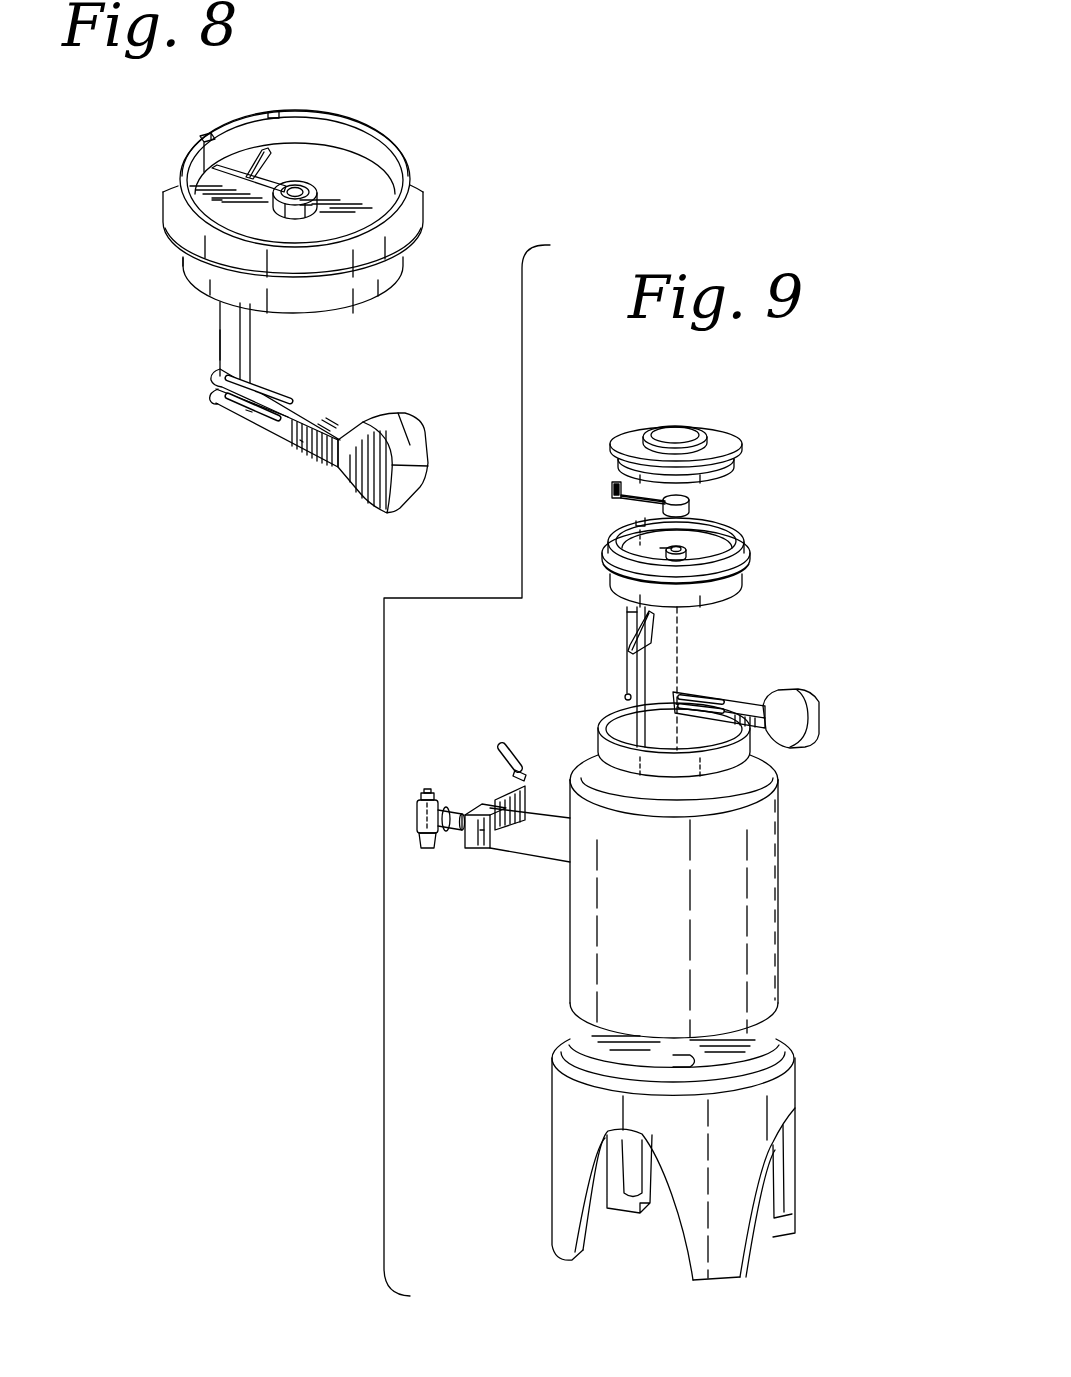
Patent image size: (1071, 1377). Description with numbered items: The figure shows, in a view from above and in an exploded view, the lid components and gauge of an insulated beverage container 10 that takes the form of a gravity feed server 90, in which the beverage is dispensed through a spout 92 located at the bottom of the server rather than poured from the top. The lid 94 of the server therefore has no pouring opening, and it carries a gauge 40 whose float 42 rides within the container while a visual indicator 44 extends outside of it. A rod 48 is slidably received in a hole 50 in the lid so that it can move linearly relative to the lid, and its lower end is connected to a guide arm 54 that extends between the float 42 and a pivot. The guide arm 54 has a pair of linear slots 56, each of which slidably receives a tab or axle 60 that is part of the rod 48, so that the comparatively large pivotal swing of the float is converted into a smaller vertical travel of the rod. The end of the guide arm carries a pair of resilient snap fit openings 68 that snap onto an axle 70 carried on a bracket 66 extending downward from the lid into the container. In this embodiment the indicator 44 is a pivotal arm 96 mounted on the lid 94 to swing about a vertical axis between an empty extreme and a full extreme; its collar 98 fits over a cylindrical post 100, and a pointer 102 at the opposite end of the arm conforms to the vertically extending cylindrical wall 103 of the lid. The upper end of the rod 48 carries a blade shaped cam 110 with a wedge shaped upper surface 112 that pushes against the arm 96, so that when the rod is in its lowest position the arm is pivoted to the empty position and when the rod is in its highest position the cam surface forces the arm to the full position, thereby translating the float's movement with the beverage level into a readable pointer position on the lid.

In FIG. 9, the insulated beverage container 10 is at (446, 718).
In FIG. 8, the gauge 40 is at (316, 508).
In FIG. 8, the float 42 is at (400, 420).
In FIG. 9, the float 42 is at (791, 718).
In FIG. 8, the visual indicator 44 is at (380, 190).
In FIG. 8, the rod 48 is at (252, 334).
In FIG. 9, the rod 48 is at (645, 676).
In FIG. 8, the hole 50 is at (262, 190).
In FIG. 9, the hole 50 is at (652, 548).
In FIG. 8, the guide arm 54 is at (324, 416).
In FIG. 9, the guide arm 54 is at (766, 701).
In FIG. 8, the linear slots 56 is at (248, 422).
In FIG. 8, the tab or axle 60 is at (226, 404).
In FIG. 8, the bracket 66 is at (221, 337).
In FIG. 9, the snap fit openings 68 is at (676, 694).
In FIG. 8, the axle 70 is at (213, 387).
In FIG. 9, the axle 70 is at (626, 690).
In FIG. 9, the gravity feed server 90 is at (568, 776).
In FIG. 9, the spout 92 is at (421, 862).
In FIG. 9, the lid 94 is at (850, 558).
In FIG. 8, the pivotal arm 96 is at (222, 244).
In FIG. 9, the pivotal arm 96 is at (640, 505).
In FIG. 8, the collar 98 is at (320, 194).
In FIG. 9, the collar 98 is at (690, 507).
In FIG. 8, the cylindrical post 100 is at (307, 185).
In FIG. 9, the cylindrical post 100 is at (688, 552).
In FIG. 9, the pointer 102 is at (612, 487).
In FIG. 8, the cylindrical wall 103 is at (248, 118).
In FIG. 9, the cylindrical wall 103 is at (706, 521).
In FIG. 8, the blade shaped cam 110 is at (272, 160).
In FIG. 9, the blade shaped cam 110 is at (650, 637).
In FIG. 8, the wedge shaped upper surface 112 is at (212, 187).
In FIG. 9, the wedge shaped upper surface 112 is at (636, 614).